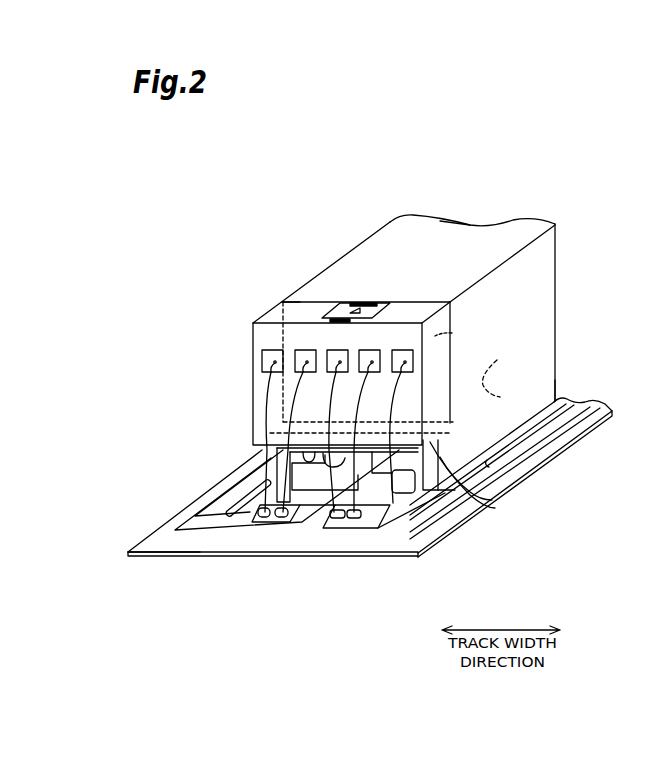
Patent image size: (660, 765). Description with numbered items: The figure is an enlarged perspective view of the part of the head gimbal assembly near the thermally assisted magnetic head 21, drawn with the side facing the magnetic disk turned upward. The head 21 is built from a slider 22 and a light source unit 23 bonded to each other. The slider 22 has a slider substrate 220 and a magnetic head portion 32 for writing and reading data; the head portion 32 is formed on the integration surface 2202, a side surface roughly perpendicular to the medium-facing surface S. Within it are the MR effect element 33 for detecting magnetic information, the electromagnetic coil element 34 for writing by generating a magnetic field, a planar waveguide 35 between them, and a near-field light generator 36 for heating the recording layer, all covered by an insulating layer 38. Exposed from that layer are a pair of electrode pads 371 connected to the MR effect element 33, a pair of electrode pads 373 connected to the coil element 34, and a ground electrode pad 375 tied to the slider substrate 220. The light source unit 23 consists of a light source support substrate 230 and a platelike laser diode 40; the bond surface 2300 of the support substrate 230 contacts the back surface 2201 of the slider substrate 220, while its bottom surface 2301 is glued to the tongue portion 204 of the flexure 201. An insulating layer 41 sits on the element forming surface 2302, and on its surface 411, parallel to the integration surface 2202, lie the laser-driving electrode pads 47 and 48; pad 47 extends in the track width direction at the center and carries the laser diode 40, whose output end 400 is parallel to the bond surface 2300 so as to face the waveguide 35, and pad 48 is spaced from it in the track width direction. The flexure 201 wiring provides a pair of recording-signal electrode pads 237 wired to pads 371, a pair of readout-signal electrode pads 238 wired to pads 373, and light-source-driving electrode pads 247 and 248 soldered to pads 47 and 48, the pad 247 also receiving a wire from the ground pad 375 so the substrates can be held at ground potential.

The thermally assisted magnetic head 21 is at (197, 193).
The medium-facing surface S is at (432, 225).
The slider substrate 220 is at (489, 238).
The magnetic head portion 32 is at (236, 348).
The electrode pads for signal terminals 371 is at (305, 352).
The electrode pads for signal terminals 373 is at (340, 356).
The electrode pad for ground 375 is at (413, 362).
The MR effect element 33 is at (368, 304).
The near-field light generator 36 is at (356, 305).
The waveguide 35 is at (383, 306).
The electromagnetic coil element 34 is at (338, 318).
The insulating layer 38 is at (292, 305).
The laser diode 40 is at (333, 520).
The insulating layer 41 is at (494, 500).
The surface 411 is at (468, 510).
The electrode pad 47 is at (382, 455).
The electrode pad 48 is at (278, 460).
The output end 400 is at (338, 458).
The slider 22 is at (570, 242).
The flexure 201 is at (165, 548).
The back surface 2201 is at (540, 392).
The integration surface 2202 is at (452, 333).
The bond surface 2300 is at (436, 438).
The light source unit 23 is at (580, 357).
The light source support substrate 230 is at (540, 375).
The bottom surface 2301 is at (503, 446).
The element forming surface 2302 is at (490, 454).
The tongue portion 204 is at (497, 460).
The electrode pad for driving of the light source 248 is at (258, 506).
The electrode pads for recording signal 237 is at (277, 520).
The electrode pad for driving of the light source 247 is at (392, 507).
The electrode pads for readout signal 238 is at (367, 513).